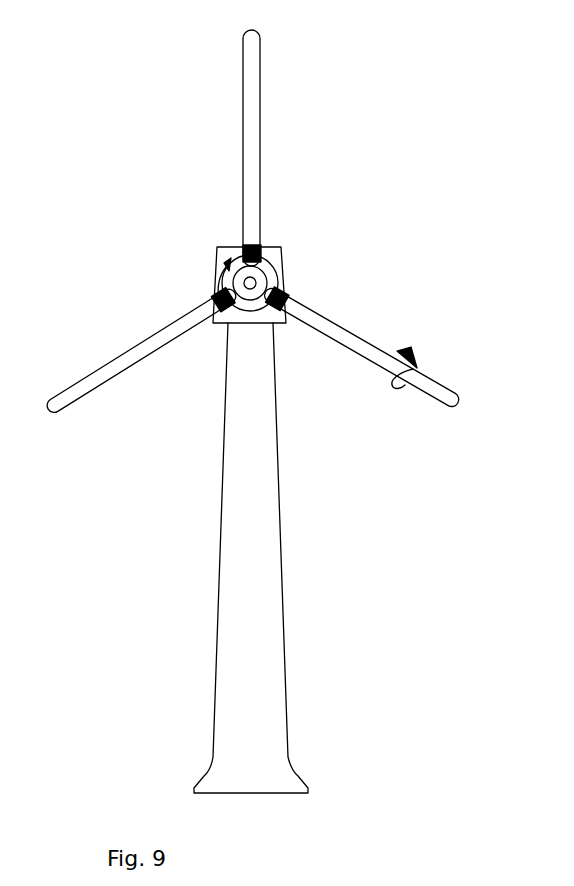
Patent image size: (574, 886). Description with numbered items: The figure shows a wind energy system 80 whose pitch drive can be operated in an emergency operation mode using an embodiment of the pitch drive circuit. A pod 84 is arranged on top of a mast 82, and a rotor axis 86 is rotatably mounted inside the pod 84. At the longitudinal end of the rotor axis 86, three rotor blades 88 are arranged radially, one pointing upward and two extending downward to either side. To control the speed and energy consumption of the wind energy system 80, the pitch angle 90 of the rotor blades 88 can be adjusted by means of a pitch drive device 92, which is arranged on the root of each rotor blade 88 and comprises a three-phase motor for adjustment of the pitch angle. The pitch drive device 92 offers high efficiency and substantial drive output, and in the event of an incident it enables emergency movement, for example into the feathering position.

The wind energy system 80 is at (252, 411).
The mast 82 is at (268, 537).
The pod 84 is at (217, 247).
The rotor axis 86 is at (259, 267).
The rotor blade 88 is at (258, 125).
The pitch angle 90 is at (419, 358).
The pitch drive device 92 is at (216, 291).